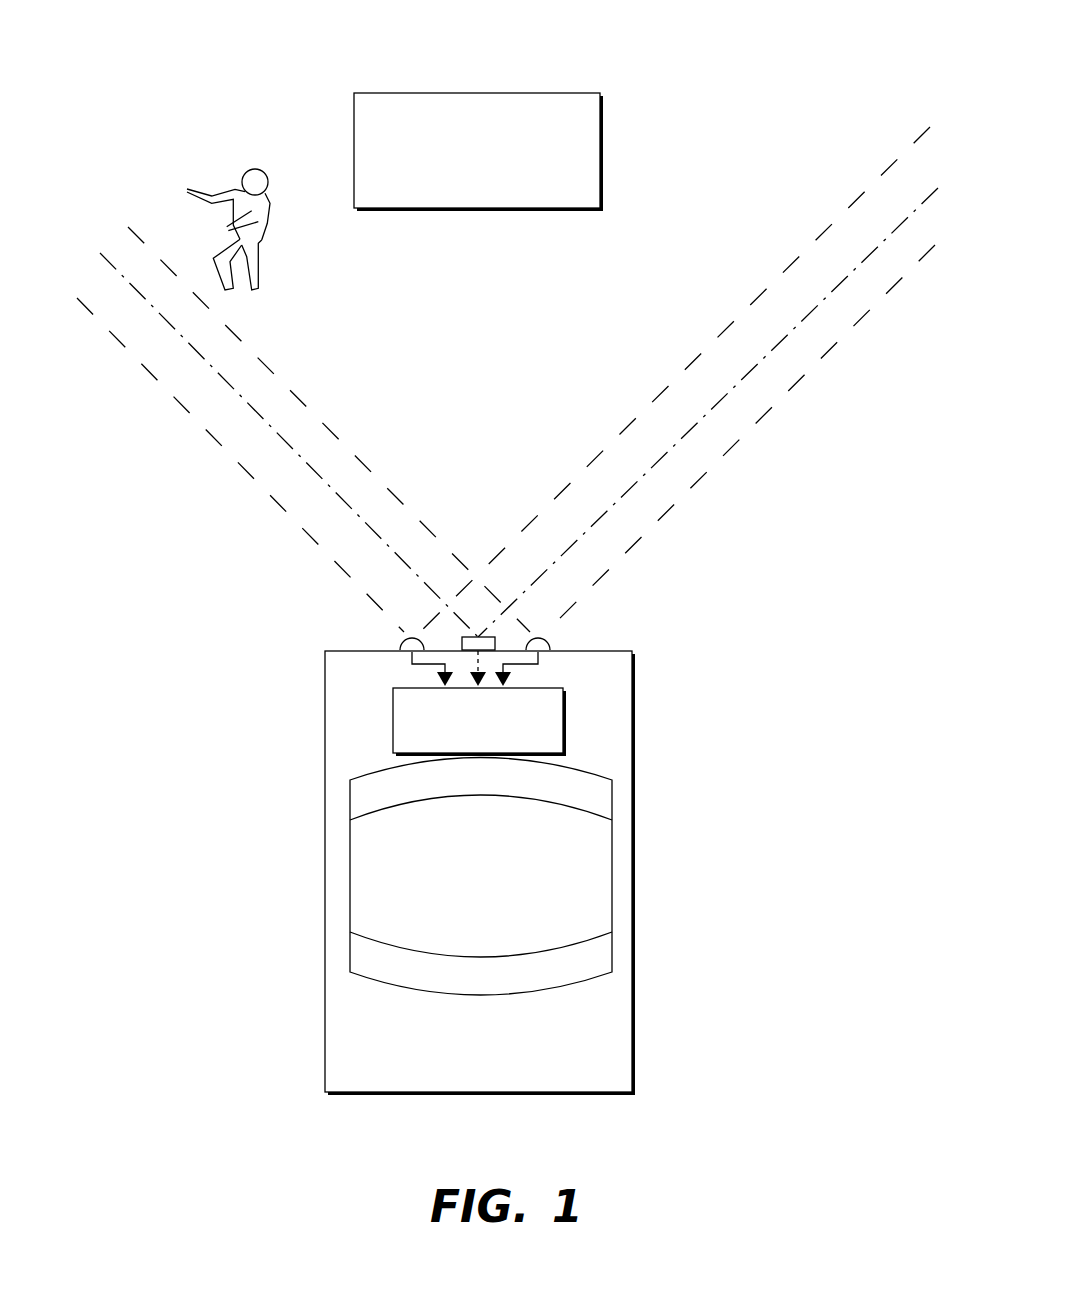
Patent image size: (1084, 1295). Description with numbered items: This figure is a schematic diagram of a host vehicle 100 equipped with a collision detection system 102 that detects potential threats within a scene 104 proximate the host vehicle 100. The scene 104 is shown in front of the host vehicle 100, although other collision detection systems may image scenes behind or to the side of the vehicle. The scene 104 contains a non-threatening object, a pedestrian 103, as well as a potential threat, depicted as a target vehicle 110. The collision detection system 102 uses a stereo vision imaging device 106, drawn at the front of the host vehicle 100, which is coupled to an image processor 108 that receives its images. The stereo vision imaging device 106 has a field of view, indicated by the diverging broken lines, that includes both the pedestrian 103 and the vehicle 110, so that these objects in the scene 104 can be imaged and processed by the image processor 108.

The host vehicle 100 is at (636, 750).
The collision detection system 102 is at (570, 634).
The pedestrian 103 is at (265, 230).
The scene 104 is at (832, 53).
The stereo vision imaging device 106 is at (385, 634).
The image processor 108 is at (566, 710).
The vehicle 110 is at (532, 93).